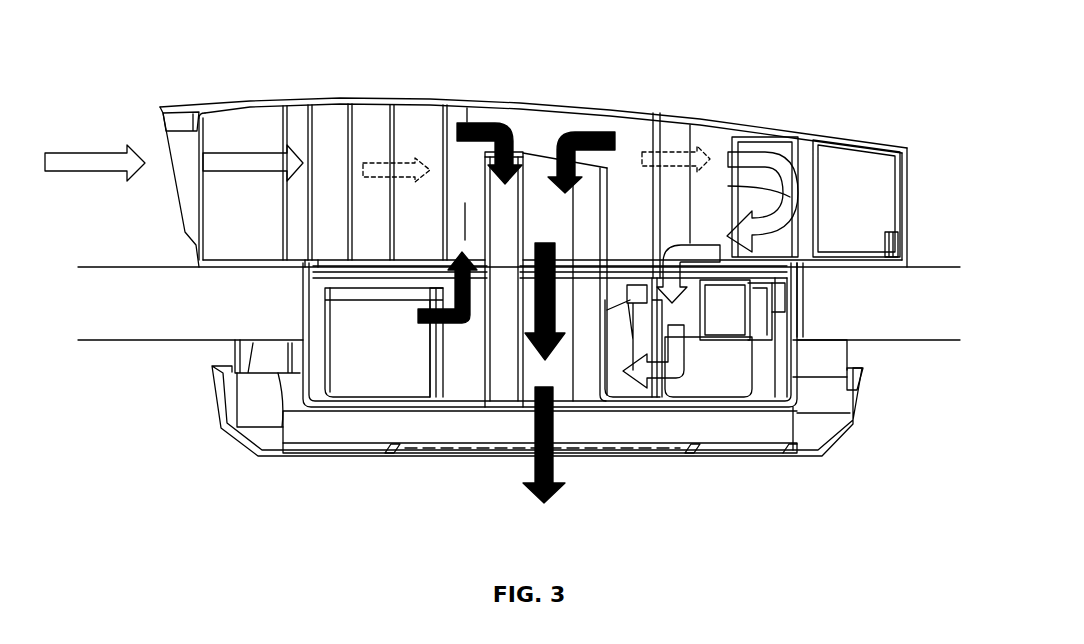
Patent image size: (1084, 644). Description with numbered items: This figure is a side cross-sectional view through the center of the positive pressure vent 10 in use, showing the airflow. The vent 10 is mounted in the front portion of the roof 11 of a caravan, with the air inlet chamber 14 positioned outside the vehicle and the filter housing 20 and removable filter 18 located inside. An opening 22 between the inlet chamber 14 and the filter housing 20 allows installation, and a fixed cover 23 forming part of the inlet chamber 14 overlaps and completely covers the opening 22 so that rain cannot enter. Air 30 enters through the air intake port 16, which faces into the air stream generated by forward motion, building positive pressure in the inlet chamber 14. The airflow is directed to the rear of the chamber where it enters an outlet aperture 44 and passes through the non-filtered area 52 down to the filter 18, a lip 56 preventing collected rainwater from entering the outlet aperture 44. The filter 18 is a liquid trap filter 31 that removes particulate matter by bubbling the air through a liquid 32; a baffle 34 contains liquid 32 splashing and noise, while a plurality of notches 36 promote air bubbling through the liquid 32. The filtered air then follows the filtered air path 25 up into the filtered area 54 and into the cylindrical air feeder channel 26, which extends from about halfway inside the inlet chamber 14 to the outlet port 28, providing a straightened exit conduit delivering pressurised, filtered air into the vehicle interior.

The positive pressure vent 10 is at (773, 128).
The roof 11 is at (921, 268).
The air inlet chamber 14 is at (325, 123).
The air intake port 16 is at (167, 137).
The filter 18 is at (722, 383).
The filter housing 20 is at (860, 406).
The opening 22 is at (802, 293).
The cover 23 is at (229, 106).
The filtered air path 25 is at (478, 125).
The air feeder channel 26 is at (607, 243).
The outlet port 28 is at (511, 456).
The air 30 is at (58, 160).
The liquid trap filter 31 is at (348, 383).
The liquid 32 is at (478, 343).
The baffle 34 is at (338, 305).
The notches 36 is at (660, 385).
The outlet aperture 44 is at (790, 197).
The non-filtered area 52 is at (724, 203).
The filtered area 54 is at (418, 182).
The lip 56 is at (856, 198).